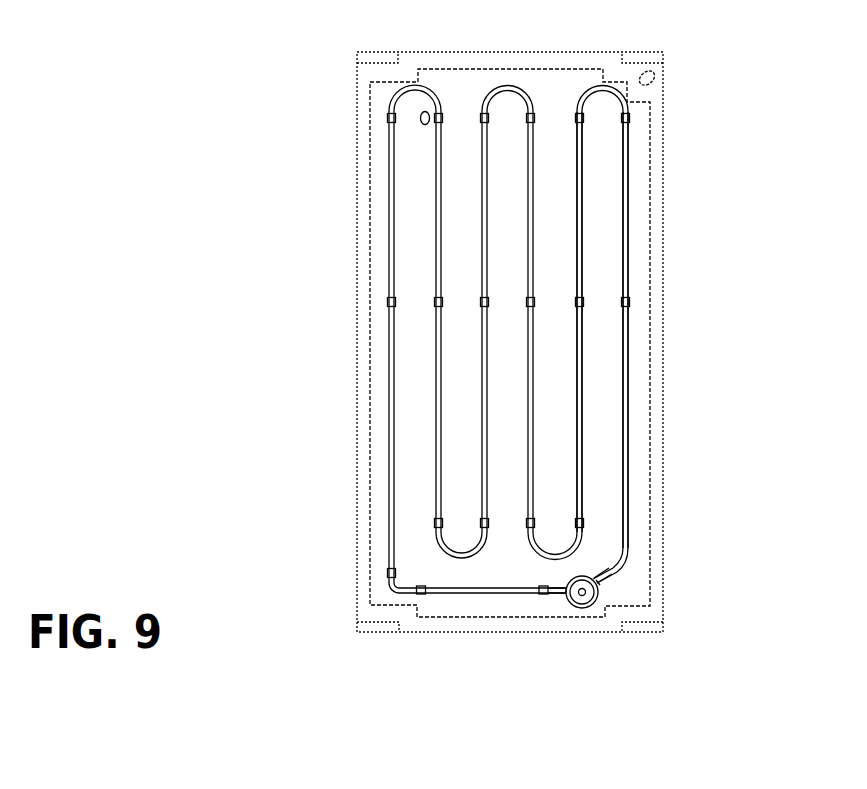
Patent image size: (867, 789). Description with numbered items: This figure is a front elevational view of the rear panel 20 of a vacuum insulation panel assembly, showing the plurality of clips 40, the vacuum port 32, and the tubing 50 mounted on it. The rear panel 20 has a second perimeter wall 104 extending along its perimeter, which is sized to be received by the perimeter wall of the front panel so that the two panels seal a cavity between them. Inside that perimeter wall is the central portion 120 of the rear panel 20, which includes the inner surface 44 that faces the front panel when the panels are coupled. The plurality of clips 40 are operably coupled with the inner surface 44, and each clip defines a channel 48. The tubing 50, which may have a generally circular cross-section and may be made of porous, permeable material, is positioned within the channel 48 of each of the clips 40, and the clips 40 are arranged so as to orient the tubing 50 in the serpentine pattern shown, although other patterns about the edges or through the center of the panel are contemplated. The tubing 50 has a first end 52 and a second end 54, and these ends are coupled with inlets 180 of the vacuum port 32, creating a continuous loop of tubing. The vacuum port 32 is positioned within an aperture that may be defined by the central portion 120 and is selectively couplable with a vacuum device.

The rear panel 20 is at (514, 339).
The channel 48 is at (380, 102).
The plurality of clips 40 is at (437, 121).
The second perimeter wall 104 is at (357, 260).
The tubing 50 is at (627, 235).
The inner surface 44 is at (597, 442).
The central portion 120 is at (636, 507).
The second end 54 is at (600, 577).
The inlets 180 is at (602, 585).
The first end 52 is at (552, 593).
The vacuum port 32 is at (582, 600).